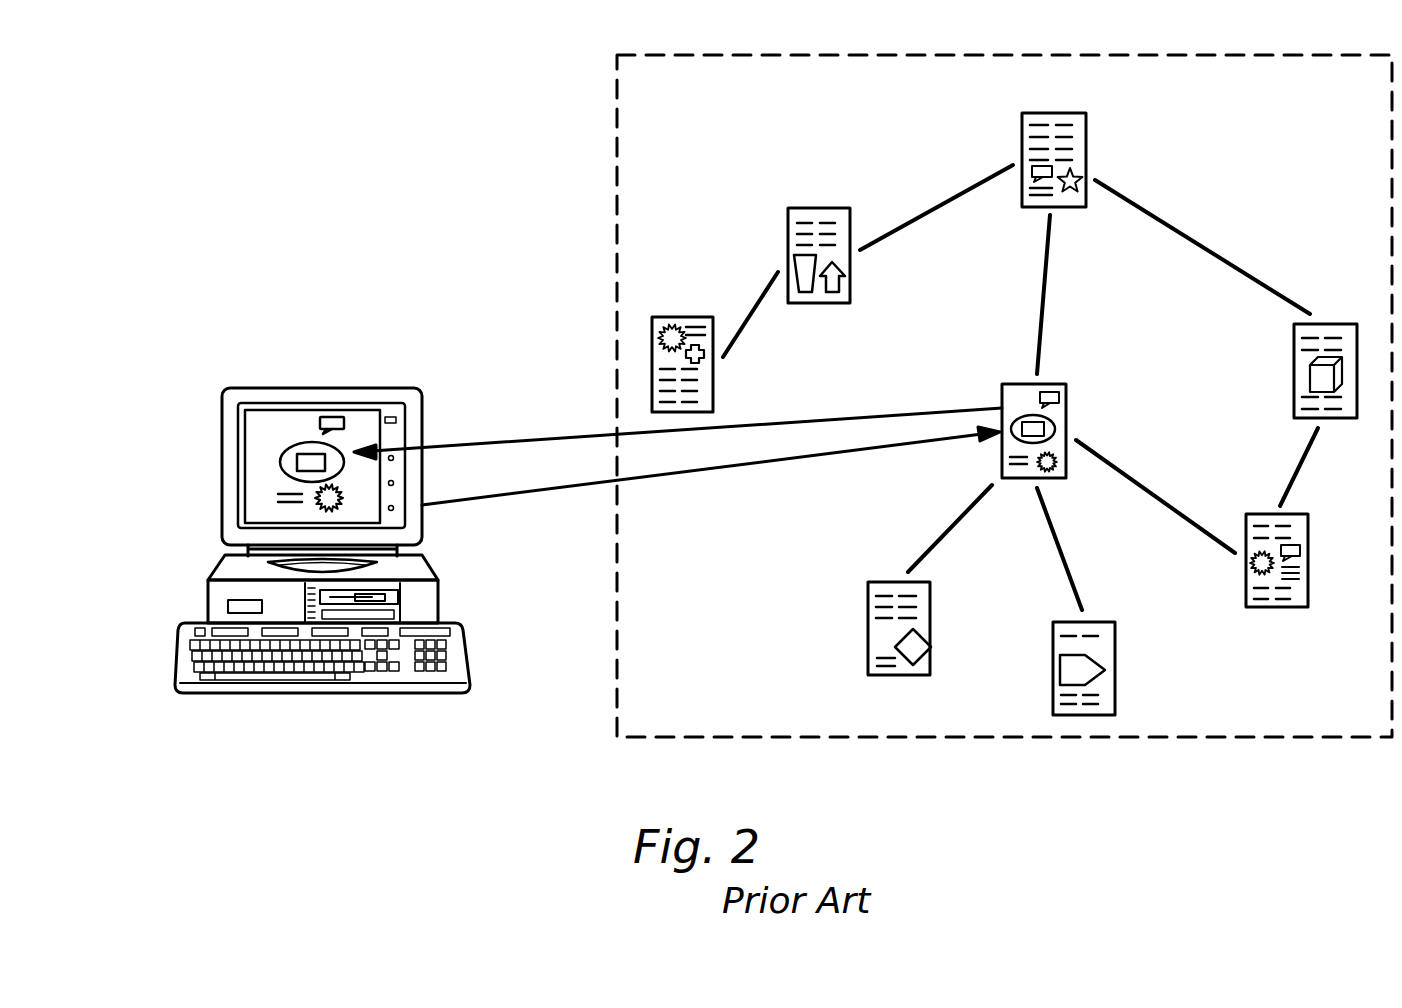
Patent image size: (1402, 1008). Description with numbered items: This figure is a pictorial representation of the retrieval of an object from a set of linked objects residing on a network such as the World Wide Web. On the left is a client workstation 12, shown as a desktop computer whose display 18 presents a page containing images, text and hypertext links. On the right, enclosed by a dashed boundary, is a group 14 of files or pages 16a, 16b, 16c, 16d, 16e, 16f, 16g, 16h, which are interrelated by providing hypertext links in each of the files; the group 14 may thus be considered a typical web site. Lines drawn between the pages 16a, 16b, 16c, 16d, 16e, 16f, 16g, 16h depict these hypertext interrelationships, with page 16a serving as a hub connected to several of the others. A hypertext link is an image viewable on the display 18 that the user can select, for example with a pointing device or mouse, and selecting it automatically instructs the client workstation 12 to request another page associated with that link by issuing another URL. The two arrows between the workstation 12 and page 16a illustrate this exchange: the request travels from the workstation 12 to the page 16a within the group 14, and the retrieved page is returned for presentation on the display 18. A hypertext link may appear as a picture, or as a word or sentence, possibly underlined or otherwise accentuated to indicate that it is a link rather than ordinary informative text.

The client workstation 12 is at (210, 461).
The group of files or pages 14 is at (617, 213).
The file or page 16a is at (1066, 418).
The file or page 16b is at (1086, 148).
The file or page 16c is at (788, 236).
The file or page 16d is at (652, 370).
The file or page 16e is at (1334, 324).
The file or page 16f is at (868, 616).
The file or page 16g is at (1053, 668).
The file or page 16h is at (1278, 607).
The workstation display 18 is at (272, 417).